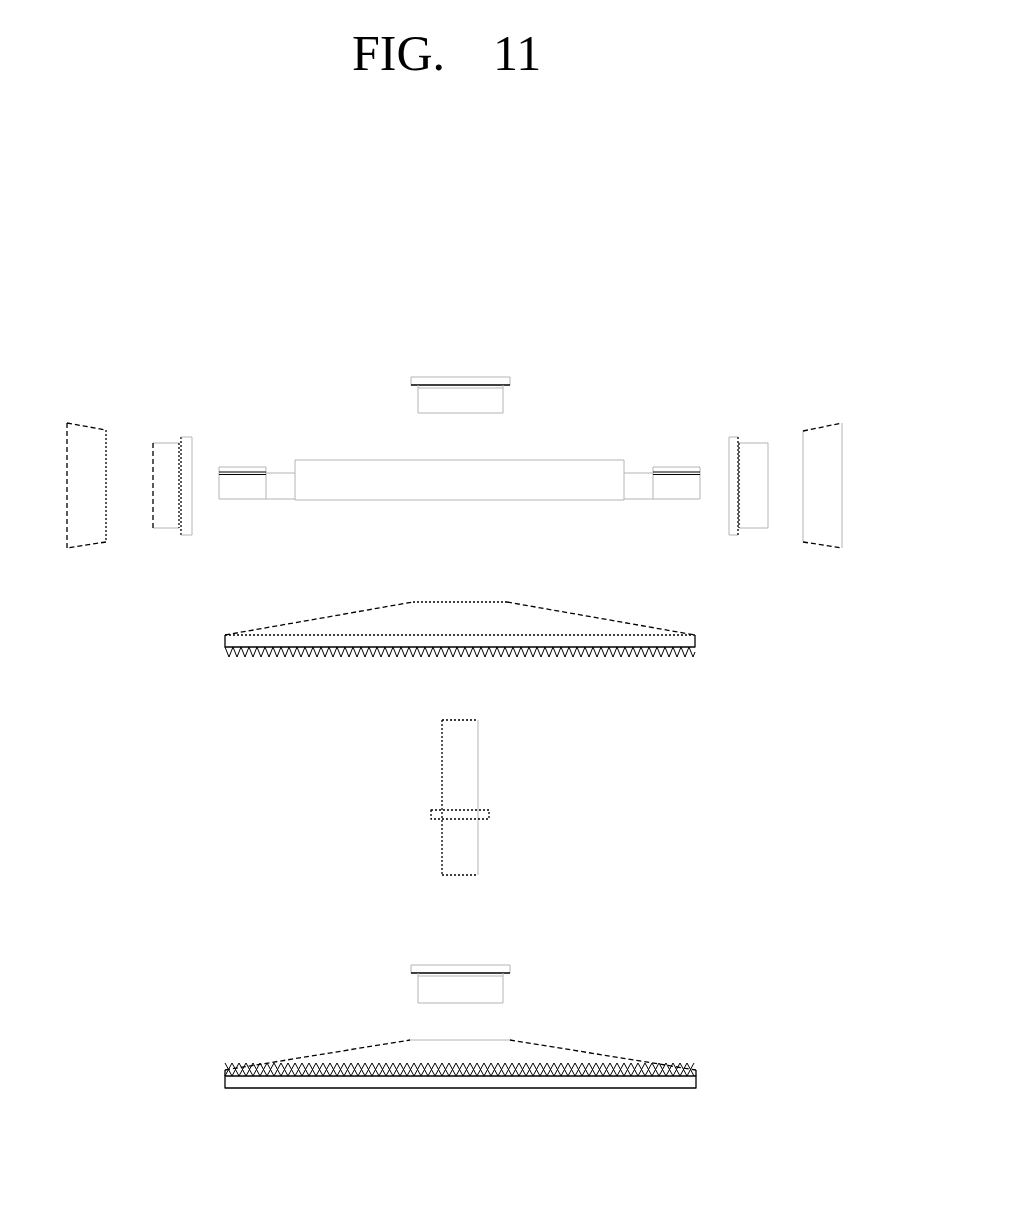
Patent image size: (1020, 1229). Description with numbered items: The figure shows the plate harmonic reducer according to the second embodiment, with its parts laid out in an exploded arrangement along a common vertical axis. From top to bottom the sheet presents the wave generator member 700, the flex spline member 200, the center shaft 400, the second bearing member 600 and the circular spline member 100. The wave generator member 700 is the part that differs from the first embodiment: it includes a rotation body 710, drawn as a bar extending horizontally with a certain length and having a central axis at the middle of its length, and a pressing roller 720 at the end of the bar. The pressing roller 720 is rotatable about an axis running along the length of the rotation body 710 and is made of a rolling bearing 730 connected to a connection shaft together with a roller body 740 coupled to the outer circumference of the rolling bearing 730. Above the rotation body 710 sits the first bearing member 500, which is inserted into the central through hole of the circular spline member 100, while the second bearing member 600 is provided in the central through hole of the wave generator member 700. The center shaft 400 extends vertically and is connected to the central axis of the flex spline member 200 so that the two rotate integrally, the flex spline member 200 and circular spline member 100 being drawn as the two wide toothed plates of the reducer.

The circular spline member 100 is at (724, 1051).
The flex spline member 200 is at (722, 646).
The center shaft 400 is at (521, 754).
The first bearing member 500 is at (523, 370).
The second bearing member 600 is at (534, 977).
The wave generator member 700 is at (470, 421).
The rotation body 710 is at (578, 460).
The pressing roller 720 is at (792, 442).
The rolling bearing 730 is at (822, 545).
The roller body 740 is at (752, 528).